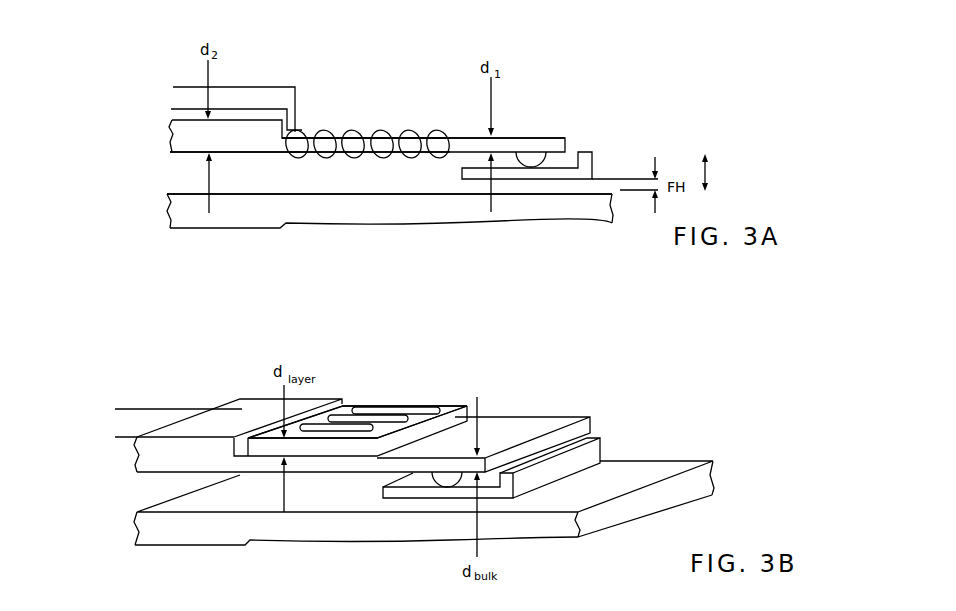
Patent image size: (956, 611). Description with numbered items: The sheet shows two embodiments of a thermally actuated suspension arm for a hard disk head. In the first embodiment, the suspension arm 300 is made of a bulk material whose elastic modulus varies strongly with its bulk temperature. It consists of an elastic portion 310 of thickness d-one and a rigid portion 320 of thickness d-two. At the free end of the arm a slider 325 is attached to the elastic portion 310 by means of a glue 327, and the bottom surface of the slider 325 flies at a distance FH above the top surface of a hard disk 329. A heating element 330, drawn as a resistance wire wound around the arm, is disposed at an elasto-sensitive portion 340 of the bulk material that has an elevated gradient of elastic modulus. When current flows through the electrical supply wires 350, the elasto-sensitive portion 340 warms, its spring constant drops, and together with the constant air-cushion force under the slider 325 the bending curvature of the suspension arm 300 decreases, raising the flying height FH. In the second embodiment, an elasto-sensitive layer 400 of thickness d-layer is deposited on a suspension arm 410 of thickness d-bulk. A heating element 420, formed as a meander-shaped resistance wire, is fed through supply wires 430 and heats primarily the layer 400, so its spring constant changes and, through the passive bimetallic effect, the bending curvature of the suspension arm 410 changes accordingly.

In FIG. 3A, the suspension arm 300 is at (404, 60).
In FIG. 3A, the elastic portion 310 is at (532, 142).
In FIG. 3A, the rigid portion 320 is at (171, 140).
In FIG. 3A, the slider 325 is at (593, 158).
In FIG. 3A, the glue 327 is at (528, 162).
In FIG. 3A, the hard disk 329 is at (190, 193).
In FIG. 3A, the heating element 330 is at (412, 130).
In FIG. 3A, the elasto-sensitive portion 340 is at (373, 143).
In FIG. 3A, the electrical supply wires 350 is at (255, 107).
In FIG. 3B, the elasto-sensitive layer 400 is at (448, 418).
In FIG. 3B, the suspension arm 410 is at (537, 423).
In FIG. 3B, the heating element 420 is at (375, 405).
In FIG. 3B, the supply wires 430 is at (116, 437).